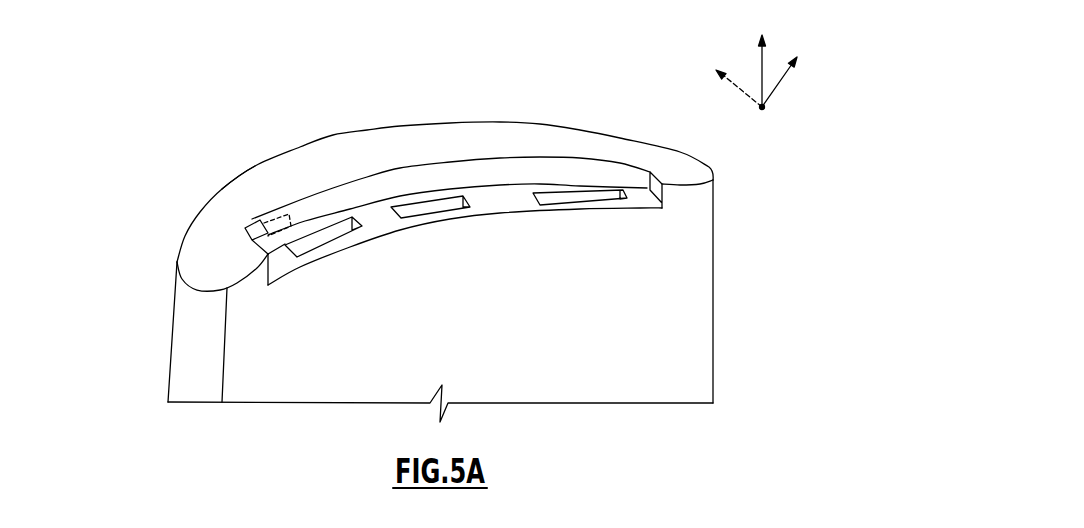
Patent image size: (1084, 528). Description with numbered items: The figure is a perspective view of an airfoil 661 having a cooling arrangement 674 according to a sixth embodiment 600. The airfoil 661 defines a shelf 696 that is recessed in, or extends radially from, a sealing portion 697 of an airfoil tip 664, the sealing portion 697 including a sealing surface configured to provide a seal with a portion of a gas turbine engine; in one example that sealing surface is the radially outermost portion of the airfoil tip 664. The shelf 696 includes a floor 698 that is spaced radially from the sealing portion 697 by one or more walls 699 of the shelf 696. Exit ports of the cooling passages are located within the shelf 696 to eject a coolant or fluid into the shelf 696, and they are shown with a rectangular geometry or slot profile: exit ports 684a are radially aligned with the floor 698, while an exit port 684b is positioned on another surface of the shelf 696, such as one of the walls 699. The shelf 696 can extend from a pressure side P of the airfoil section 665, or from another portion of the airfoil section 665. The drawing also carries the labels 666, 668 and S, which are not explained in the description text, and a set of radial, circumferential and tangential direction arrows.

The embodiment 600 is at (128, 60).
The airfoil 661 is at (109, 121).
The airfoil tip 664 is at (197, 248).
The airfoil section 665 is at (136, 376).
The side wall surface 666 is at (170, 343).
The side surface 668 is at (713, 330).
The cooling arrangement 674 is at (299, 160).
The exit ports 684a is at (287, 253).
The exit ports 684b is at (252, 219).
The shelf 696 is at (487, 148).
The sealing portion 697 is at (412, 142).
The floor 698 is at (498, 203).
The walls 699 is at (630, 173).
The surface S is at (237, 177).
The pressure side P is at (243, 282).